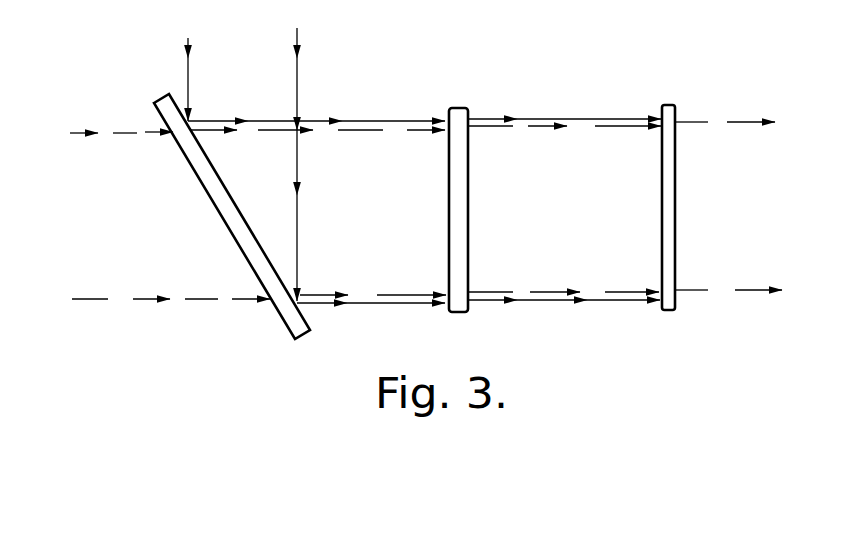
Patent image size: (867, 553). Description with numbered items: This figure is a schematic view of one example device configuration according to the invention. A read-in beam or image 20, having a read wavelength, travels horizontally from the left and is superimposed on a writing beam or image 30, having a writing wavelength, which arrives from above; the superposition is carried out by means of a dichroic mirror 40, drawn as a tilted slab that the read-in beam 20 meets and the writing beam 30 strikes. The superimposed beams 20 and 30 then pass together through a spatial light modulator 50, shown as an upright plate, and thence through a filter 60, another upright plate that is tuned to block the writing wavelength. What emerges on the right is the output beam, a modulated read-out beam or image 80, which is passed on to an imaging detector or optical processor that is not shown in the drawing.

The read-in beam 20 is at (126, 134).
The writing beam 30 is at (297, 83).
The dichroic mirror 40 is at (302, 331).
The spatial light modulator 50 is at (470, 230).
The filter 60 is at (662, 103).
The modulated read-out beam 80 is at (740, 123).